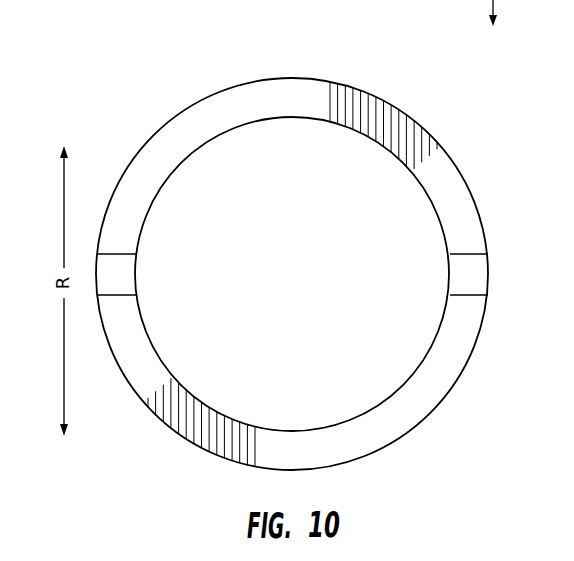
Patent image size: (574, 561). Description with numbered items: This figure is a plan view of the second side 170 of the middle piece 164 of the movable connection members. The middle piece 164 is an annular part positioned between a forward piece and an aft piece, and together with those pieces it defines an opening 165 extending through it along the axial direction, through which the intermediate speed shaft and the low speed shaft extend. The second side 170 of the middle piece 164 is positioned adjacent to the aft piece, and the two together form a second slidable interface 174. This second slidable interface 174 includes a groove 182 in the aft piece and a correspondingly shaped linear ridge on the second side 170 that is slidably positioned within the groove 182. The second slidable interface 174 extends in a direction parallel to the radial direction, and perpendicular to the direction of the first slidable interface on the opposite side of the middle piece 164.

The middle piece 164 is at (418, 124).
The opening 165 is at (413, 199).
The second side 170 is at (299, 95).
The second slidable interface 174 is at (433, 374).
The groove 182 is at (117, 270).